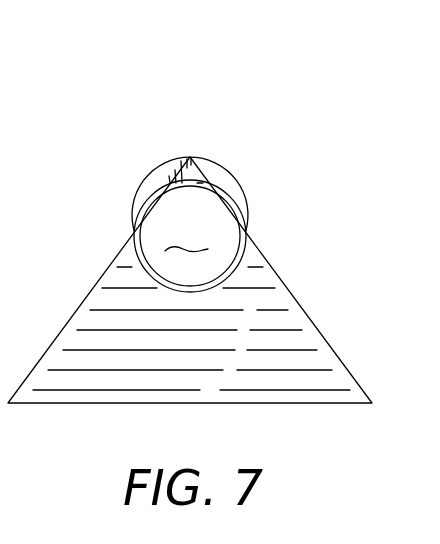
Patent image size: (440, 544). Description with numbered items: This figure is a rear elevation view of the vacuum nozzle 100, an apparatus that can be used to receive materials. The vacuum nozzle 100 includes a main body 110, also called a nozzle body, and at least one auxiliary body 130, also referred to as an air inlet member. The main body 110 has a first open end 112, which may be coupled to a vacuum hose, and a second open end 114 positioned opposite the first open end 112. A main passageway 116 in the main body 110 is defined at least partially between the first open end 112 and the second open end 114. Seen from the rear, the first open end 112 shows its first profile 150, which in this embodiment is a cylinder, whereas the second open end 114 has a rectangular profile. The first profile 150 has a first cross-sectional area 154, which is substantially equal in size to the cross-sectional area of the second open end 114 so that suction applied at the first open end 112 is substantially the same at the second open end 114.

The vacuum nozzle 100 is at (287, 93).
The main body 110 is at (247, 232).
The first open end 112 is at (134, 234).
The second open end 114 is at (332, 403).
The main passageway 116 is at (186, 230).
The auxiliary body 130 is at (223, 166).
The first profile 150 is at (163, 257).
The first cross-sectional area 154 is at (161, 217).